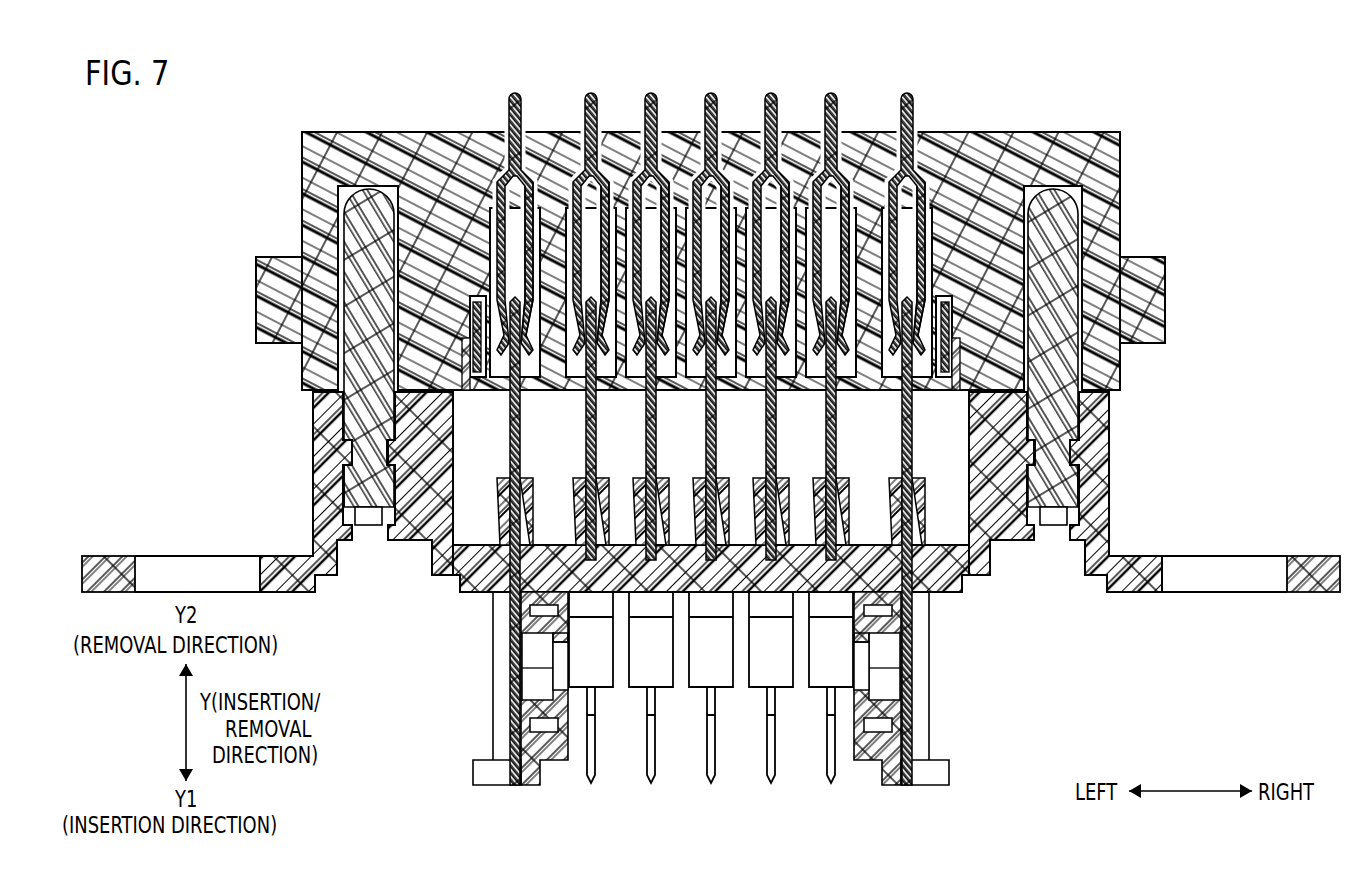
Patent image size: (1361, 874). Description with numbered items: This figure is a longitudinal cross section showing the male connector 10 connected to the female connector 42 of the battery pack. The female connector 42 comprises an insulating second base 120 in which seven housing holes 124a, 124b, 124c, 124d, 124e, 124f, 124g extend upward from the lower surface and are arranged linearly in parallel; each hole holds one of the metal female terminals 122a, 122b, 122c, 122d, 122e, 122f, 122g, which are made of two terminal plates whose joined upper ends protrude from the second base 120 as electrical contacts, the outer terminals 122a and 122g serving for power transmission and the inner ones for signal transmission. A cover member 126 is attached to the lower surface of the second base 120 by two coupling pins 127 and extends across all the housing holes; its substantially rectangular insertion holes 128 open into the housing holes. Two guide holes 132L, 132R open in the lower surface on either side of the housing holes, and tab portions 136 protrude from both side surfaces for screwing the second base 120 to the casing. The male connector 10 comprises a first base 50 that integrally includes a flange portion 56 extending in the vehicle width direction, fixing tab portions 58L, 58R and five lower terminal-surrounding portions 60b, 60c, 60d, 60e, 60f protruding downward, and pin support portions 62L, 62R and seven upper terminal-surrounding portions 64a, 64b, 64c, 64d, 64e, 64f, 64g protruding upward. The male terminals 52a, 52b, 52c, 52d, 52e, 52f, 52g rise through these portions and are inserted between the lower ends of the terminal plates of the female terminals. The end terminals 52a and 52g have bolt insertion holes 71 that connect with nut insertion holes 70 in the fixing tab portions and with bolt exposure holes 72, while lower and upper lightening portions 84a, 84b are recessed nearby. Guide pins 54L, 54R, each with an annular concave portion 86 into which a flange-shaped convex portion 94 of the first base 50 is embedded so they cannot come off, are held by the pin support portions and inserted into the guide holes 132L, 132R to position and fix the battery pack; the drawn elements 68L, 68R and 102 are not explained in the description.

The male connector 10 is at (711, 428).
The female connector 42 is at (710, 227).
The first base 50 is at (711, 513).
The second base 120 is at (1058, 145).
The female terminal 122a is at (516, 86).
The female terminal 122b is at (592, 86).
The female terminal 122c is at (652, 86).
The female terminal 122d is at (712, 86).
The female terminal 122e is at (772, 86).
The female terminal 122f is at (832, 86).
The female terminal 122g is at (908, 86).
The housing hole 124a is at (526, 233).
The housing hole 124b is at (602, 233).
The housing hole 124c is at (662, 233).
The housing hole 124d is at (722, 233).
The housing hole 124e is at (782, 233).
The housing hole 124f is at (842, 233).
The housing hole 124g is at (918, 233).
The cover member 126 is at (957, 368).
The coupling pin 127 is at (474, 318).
The insertion hole 128 is at (583, 393).
The guide hole 132L is at (352, 198).
The guide hole 132R is at (1032, 207).
The tab portion 136 is at (266, 283).
The guide pin 54L is at (360, 230).
The guide pin 54R is at (1058, 228).
The flange portion 56 is at (1126, 562).
The fixing tab portion 58L is at (490, 776).
The fixing tab portion 58R is at (930, 776).
The lower terminal-surrounding portion 60b is at (582, 677).
The lower terminal-surrounding portion 60c is at (638, 677).
The lower terminal-surrounding portion 60d is at (698, 677).
The lower terminal-surrounding portion 60e is at (760, 677).
The lower terminal-surrounding portion 60f is at (818, 677).
The pin support portion 62L is at (320, 407).
The pin support portion 62R is at (1105, 407).
The upper terminal-surrounding portion 64a is at (550, 475).
The upper terminal-surrounding portion 64b is at (606, 487).
The upper terminal-surrounding portion 64c is at (666, 487).
The upper terminal-surrounding portion 64d is at (726, 487).
The upper terminal-surrounding portion 64e is at (787, 487).
The upper terminal-surrounding portion 64f is at (847, 487).
The upper terminal-surrounding portion 64g is at (923, 487).
The left flange 68L is at (183, 570).
The right flange 68R is at (1243, 570).
The nut insertion hole 70 is at (532, 664).
The bolt insertion hole 71 is at (513, 679).
The bolt exposure hole 72 is at (560, 648).
The lower lightening portion 84a is at (540, 726).
The upper lightening portion 84b is at (538, 611).
The annular concave portion 86 is at (345, 459).
The flange-shaped convex portion 94 is at (349, 451).
The peg lower portion 102 is at (345, 484).
The male terminal 52a is at (508, 443).
The male terminal 52b is at (588, 432).
The male terminal 52c is at (648, 432).
The male terminal 52d is at (708, 432).
The male terminal 52e is at (768, 432).
The male terminal 52f is at (836, 432).
The male terminal 52g is at (912, 432).